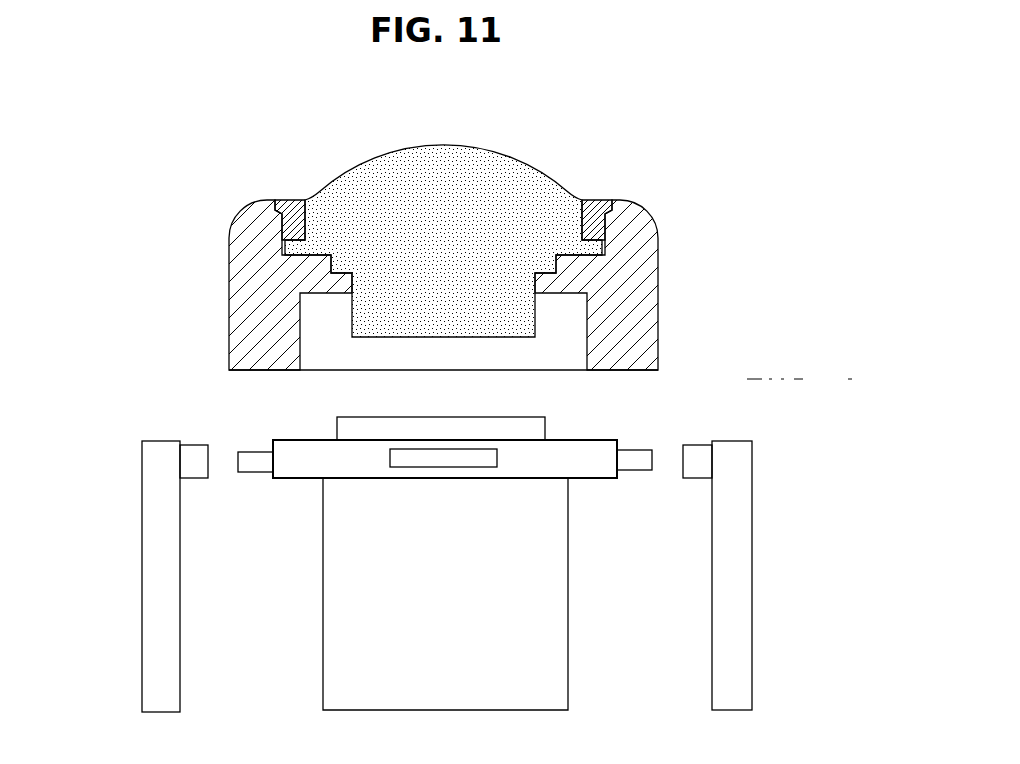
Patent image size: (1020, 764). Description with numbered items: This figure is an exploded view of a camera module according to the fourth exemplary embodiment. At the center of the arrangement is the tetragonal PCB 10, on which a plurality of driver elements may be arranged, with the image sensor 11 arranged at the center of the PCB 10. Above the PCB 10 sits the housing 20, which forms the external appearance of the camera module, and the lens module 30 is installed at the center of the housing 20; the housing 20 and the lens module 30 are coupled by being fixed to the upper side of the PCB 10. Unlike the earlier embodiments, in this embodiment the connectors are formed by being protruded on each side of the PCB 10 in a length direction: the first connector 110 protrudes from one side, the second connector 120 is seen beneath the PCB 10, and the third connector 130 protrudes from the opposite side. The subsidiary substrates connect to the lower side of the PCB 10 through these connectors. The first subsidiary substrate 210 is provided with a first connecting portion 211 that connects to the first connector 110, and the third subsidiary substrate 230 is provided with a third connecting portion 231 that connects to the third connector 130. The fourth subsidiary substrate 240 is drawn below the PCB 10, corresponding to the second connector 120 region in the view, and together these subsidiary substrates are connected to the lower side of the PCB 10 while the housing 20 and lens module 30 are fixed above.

The PCB 10 is at (612, 442).
The image sensor 11 is at (543, 423).
The housing 20 is at (650, 222).
The lens module 30 is at (519, 163).
The first connector 110 is at (255, 453).
The second connector 120 is at (405, 460).
The third connector 130 is at (633, 465).
The first subsidiary substrate 210 is at (175, 672).
The first connecting portion 211 is at (194, 448).
The third subsidiary substrate 230 is at (715, 650).
The third connecting portion 231 is at (700, 450).
The fourth subsidiary substrate 240 is at (555, 633).